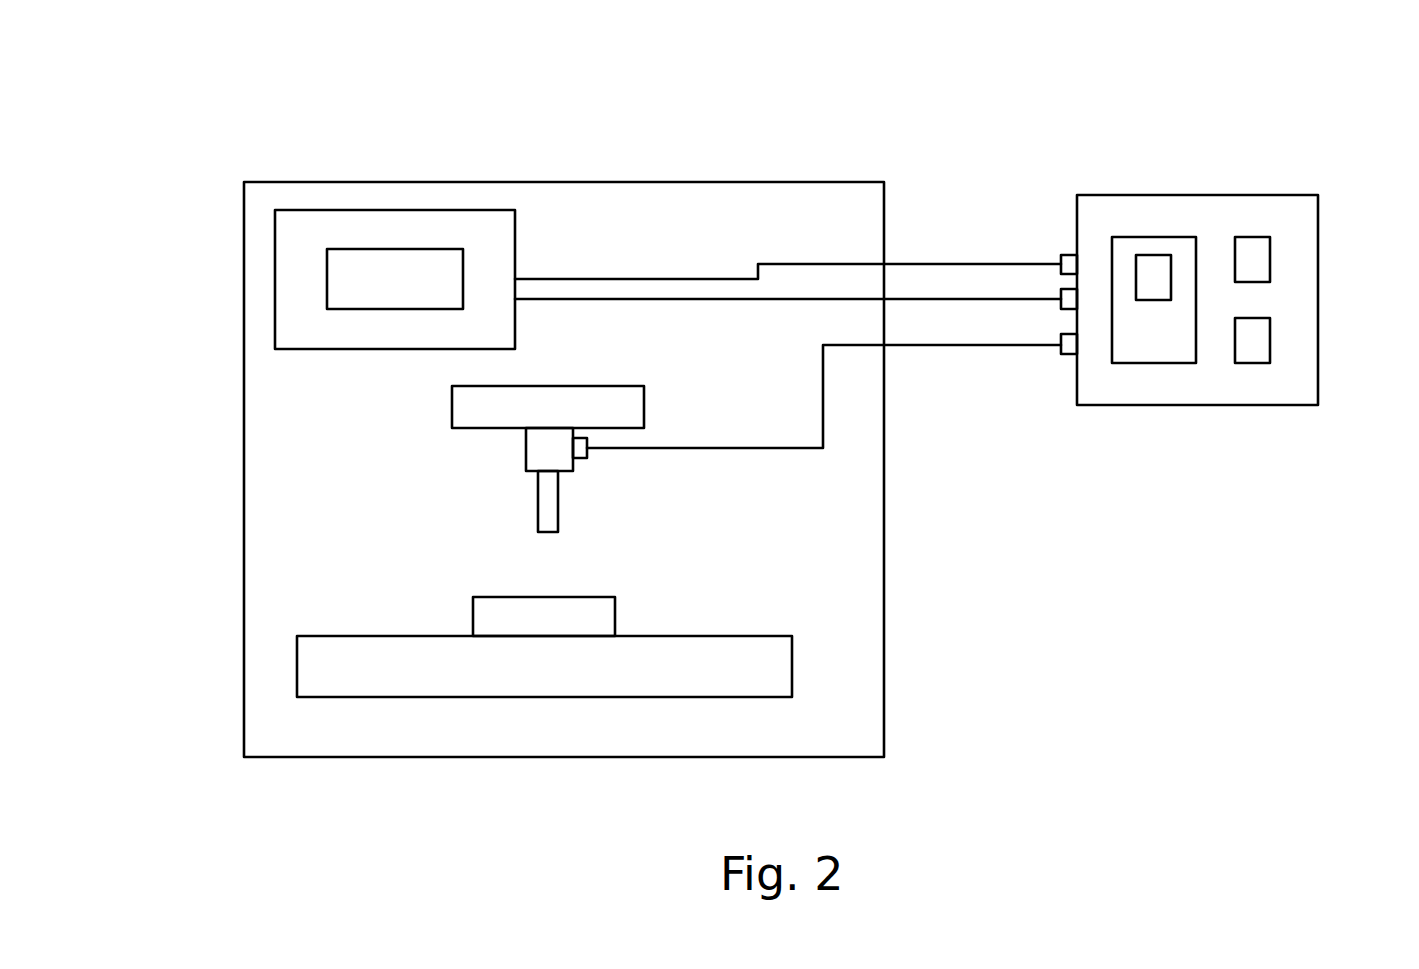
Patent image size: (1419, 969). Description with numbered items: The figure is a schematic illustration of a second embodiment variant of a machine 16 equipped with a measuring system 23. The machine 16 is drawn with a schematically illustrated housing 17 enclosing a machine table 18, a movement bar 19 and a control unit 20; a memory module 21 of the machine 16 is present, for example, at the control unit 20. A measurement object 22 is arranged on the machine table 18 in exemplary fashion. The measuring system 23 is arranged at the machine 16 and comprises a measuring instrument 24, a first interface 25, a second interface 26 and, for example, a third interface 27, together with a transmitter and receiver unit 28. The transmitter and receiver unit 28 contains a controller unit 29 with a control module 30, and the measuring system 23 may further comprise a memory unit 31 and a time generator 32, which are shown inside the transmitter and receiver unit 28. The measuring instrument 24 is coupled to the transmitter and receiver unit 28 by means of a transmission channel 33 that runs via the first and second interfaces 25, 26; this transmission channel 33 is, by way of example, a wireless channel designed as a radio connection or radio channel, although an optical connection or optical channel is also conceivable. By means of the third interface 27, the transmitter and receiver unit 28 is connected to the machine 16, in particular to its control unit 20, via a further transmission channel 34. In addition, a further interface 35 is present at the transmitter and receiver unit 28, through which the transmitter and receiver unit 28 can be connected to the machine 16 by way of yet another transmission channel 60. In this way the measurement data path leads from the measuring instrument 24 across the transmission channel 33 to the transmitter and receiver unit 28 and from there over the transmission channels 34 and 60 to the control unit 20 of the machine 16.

The machine 16 is at (267, 793).
The housing 17 is at (884, 607).
The machine table 18 is at (467, 677).
The movement bar 19 is at (452, 402).
The control unit 20 is at (443, 210).
The memory module 21 is at (373, 249).
The measurement object 22 is at (587, 618).
The measuring system 23 is at (1073, 128).
The measuring instrument 24 is at (526, 461).
The first interface 25 is at (587, 458).
The second interface 26 is at (1063, 355).
The third interface 27 is at (1068, 255).
The transmitter and receiver unit 28 is at (1233, 195).
The controller unit 29 is at (1153, 237).
The control module 30 is at (1167, 255).
The memory unit 31 is at (1270, 258).
The time generator 32 is at (1270, 340).
The transmission channel 33 is at (990, 346).
The further transmission channel 34 is at (940, 264).
The further interface 35 is at (1062, 289).
The further transmission channel 60 is at (803, 299).